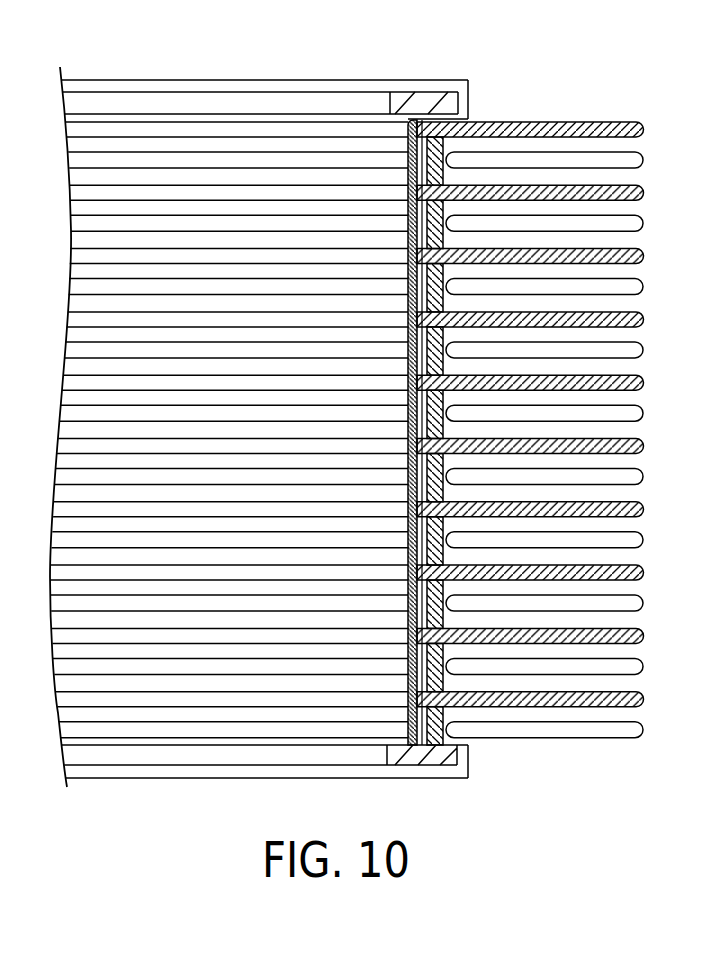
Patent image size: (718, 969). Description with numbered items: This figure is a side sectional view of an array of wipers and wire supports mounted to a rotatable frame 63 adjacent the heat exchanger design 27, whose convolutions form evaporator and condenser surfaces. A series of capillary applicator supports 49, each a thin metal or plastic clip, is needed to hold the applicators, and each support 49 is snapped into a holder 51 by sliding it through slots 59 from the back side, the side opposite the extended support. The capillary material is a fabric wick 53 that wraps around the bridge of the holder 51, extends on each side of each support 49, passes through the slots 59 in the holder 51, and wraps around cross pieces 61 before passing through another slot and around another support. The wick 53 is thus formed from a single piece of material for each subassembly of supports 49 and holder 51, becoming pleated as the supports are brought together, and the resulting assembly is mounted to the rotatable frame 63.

The rotatable frame 63 is at (447, 106).
The holder 51 is at (445, 142).
The capillary applicator support 49 is at (645, 257).
The heat exchanger design 27 is at (645, 320).
The fabric wick 53 is at (626, 581).
The cross pieces 61 is at (436, 657).
The slots 59 is at (447, 712).